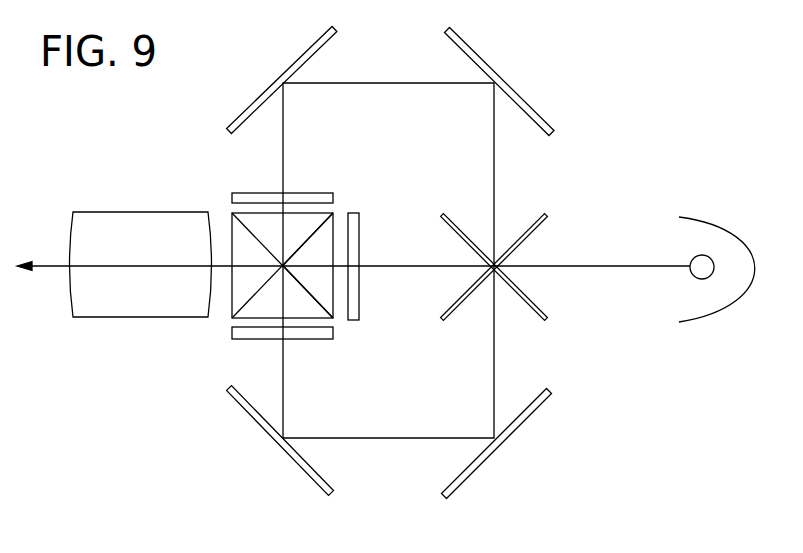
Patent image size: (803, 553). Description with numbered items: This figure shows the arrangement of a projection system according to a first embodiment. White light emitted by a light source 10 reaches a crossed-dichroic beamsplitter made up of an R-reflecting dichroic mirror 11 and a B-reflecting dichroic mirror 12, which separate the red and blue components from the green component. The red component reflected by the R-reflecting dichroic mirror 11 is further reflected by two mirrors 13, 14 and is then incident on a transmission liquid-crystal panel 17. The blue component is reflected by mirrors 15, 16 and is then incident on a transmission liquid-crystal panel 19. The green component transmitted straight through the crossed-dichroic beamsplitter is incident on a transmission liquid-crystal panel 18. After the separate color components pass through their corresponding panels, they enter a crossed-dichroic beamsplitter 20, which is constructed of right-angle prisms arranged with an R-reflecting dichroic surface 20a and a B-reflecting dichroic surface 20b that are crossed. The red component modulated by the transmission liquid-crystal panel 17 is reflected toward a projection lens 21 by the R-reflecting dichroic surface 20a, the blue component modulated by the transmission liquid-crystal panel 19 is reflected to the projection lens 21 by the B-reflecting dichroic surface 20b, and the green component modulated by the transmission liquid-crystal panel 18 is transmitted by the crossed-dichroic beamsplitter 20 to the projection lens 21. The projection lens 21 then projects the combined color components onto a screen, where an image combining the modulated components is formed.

The light source 10 is at (695, 212).
The R-reflecting dichroic mirror 11 is at (540, 213).
The B-reflecting dichroic mirror 12 is at (446, 213).
The mirror 13 is at (467, 38).
The mirror 14 is at (312, 43).
The mirror 15 is at (527, 420).
The mirror 16 is at (303, 473).
The transmission liquid-crystal panel 17 is at (237, 193).
The transmission liquid-crystal panel 18 is at (357, 230).
The transmission liquid-crystal panel 19 is at (317, 339).
The crossed-dichroic beamsplitter 20 is at (237, 297).
The R-reflecting dichroic surface 20a is at (318, 227).
The B-reflecting dichroic surface 20b is at (323, 302).
The projection lens 21 is at (82, 220).